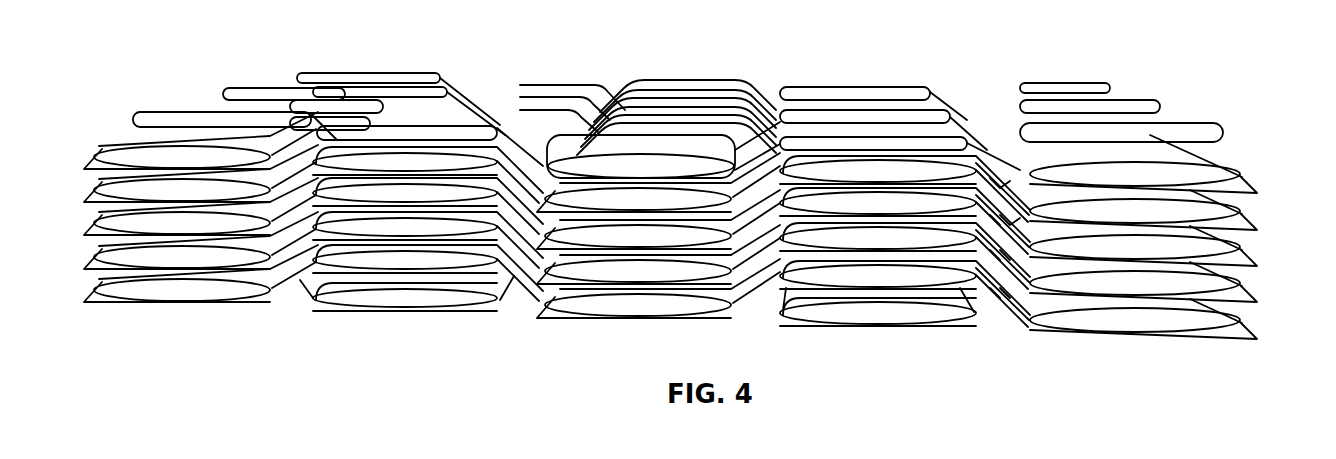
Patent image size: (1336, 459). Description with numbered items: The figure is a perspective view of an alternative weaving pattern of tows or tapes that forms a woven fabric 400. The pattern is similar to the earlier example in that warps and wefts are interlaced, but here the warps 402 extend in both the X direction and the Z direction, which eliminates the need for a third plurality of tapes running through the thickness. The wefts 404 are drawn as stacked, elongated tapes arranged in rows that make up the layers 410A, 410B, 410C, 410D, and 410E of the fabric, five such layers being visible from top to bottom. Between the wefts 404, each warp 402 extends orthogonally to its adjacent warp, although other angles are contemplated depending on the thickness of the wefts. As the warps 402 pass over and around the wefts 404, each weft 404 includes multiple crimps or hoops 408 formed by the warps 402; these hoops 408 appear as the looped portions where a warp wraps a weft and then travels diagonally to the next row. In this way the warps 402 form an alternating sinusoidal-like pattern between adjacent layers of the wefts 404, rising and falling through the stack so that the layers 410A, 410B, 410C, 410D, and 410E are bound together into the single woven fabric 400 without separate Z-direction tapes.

The woven fabric 400 is at (638, 168).
The warp 402 is at (177, 113).
The weft 404 is at (226, 158).
The crimp or hoop 408 is at (708, 128).
The layer 410A is at (1230, 177).
The layer 410B is at (1228, 213).
The layer 410C is at (1225, 248).
The layer 410D is at (1167, 287).
The layer 410E is at (1108, 323).